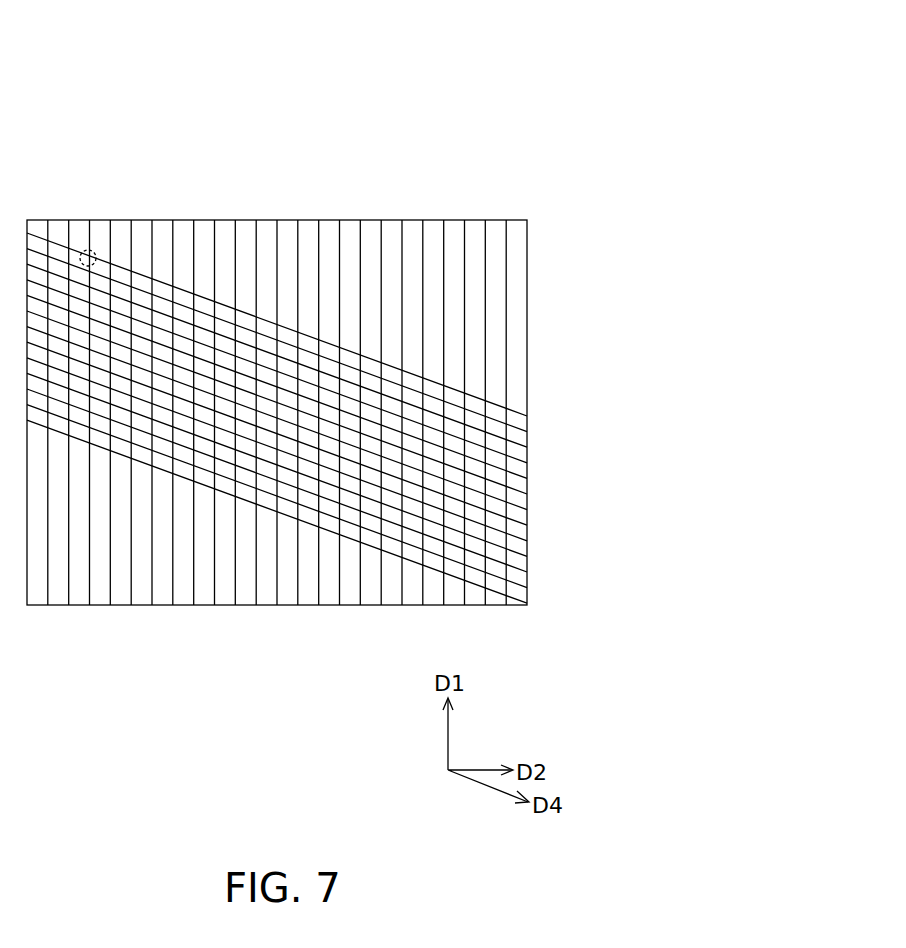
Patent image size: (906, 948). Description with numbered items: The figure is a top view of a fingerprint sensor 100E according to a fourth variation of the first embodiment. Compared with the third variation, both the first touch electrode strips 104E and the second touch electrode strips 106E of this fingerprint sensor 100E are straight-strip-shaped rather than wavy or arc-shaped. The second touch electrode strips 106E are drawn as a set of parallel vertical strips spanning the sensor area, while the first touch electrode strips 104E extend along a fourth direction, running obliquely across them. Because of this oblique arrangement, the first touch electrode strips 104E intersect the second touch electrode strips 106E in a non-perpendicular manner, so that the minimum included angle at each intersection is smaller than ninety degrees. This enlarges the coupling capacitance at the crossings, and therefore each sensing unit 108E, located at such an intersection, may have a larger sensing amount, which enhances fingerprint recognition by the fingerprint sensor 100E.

The fingerprint sensor 100E is at (299, 316).
The first touch electrode strips 104E is at (56, 248).
The second touch electrode strips 106E is at (382, 237).
The sensing unit 108E is at (95, 257).